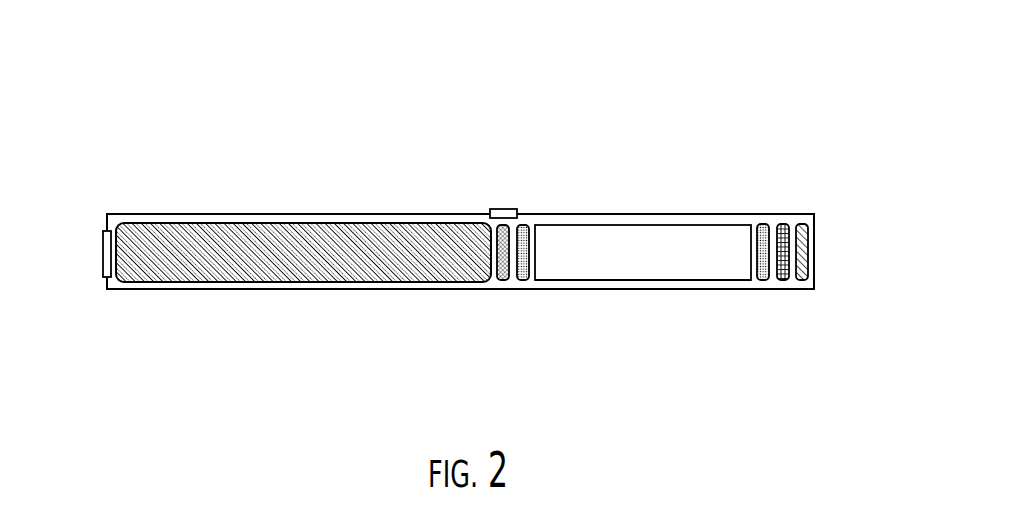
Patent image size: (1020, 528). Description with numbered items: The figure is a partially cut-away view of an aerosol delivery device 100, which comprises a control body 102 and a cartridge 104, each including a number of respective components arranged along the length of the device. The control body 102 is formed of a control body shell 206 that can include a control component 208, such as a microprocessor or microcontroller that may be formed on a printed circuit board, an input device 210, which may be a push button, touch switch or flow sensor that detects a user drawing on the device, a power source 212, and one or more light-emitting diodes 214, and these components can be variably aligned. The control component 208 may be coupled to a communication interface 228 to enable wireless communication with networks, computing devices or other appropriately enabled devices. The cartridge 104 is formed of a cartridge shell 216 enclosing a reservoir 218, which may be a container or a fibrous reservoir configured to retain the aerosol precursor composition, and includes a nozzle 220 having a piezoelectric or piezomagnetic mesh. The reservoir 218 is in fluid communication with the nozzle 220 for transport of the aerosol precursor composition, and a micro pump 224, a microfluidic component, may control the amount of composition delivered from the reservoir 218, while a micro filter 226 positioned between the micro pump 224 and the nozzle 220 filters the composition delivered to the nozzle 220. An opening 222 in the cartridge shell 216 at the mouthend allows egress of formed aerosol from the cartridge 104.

The aerosol delivery device 100 is at (460, 156).
The control body 102 is at (233, 127).
The cartridge 104 is at (627, 126).
The control body shell 206 is at (460, 316).
The control component 208 is at (482, 279).
The input device 210 is at (485, 195).
The power source 212 is at (303, 285).
The light-emitting diodes 214 is at (81, 254).
The cartridge shell 216 is at (643, 318).
The reservoir 218 is at (643, 279).
The nozzle 220 is at (780, 218).
The opening 222 is at (842, 251).
The micro pump 224 is at (743, 232).
The micro filter 226 is at (763, 276).
The communication interface 228 is at (546, 226).